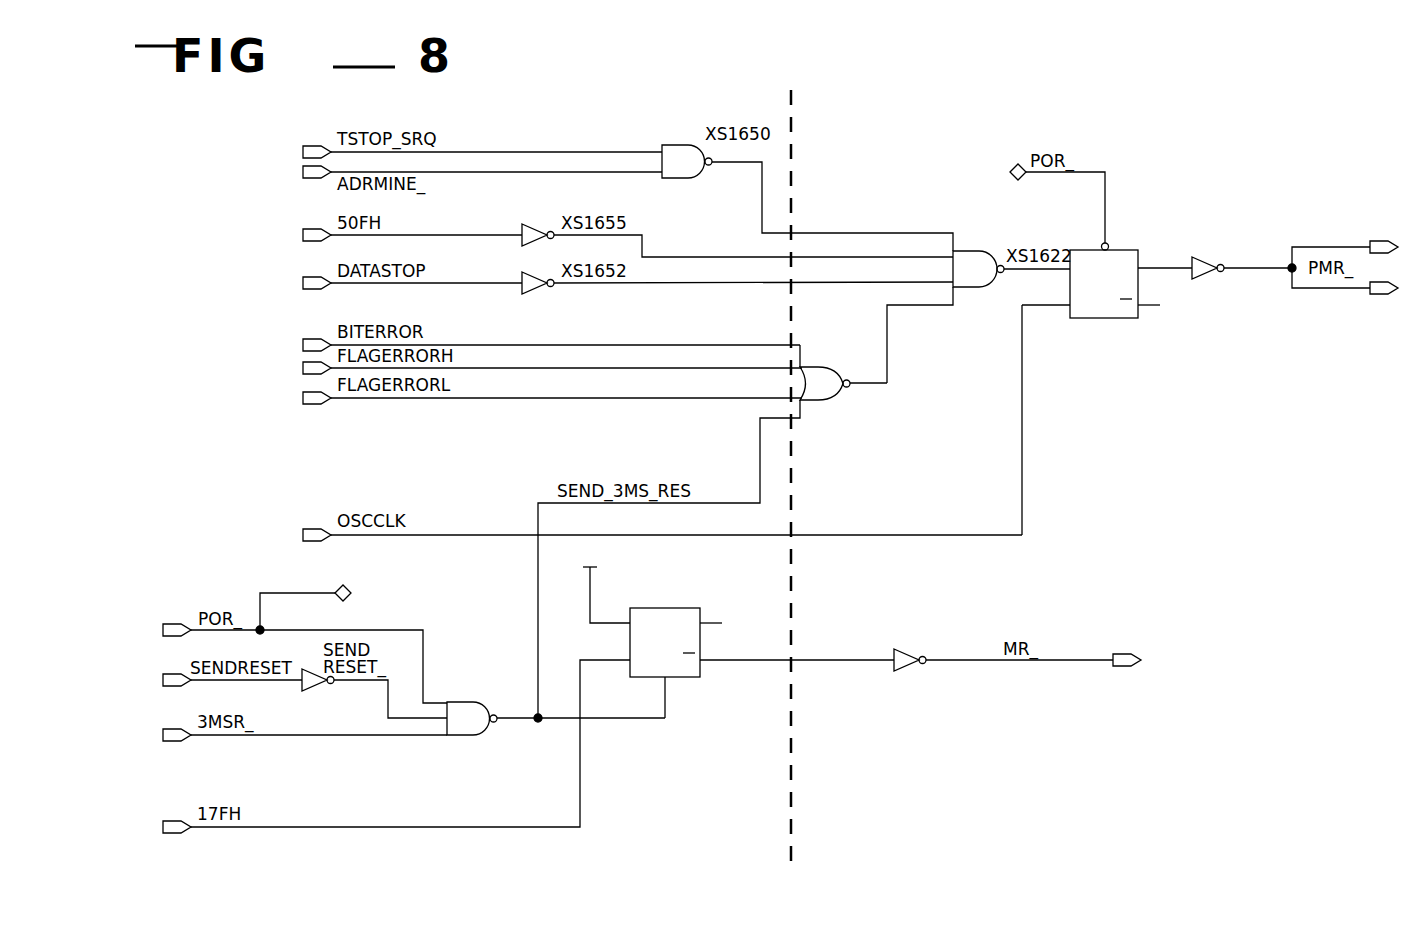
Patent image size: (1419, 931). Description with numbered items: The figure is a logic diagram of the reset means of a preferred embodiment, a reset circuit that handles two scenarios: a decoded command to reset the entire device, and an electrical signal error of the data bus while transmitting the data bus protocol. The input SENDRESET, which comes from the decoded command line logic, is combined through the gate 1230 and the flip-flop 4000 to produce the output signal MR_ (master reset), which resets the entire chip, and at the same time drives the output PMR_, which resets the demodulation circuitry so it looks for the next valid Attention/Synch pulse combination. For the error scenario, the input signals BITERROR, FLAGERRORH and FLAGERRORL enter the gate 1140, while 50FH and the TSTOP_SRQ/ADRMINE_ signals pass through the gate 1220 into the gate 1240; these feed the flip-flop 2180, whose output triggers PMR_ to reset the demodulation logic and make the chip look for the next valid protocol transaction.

The NAND gate 1220 is at (807, 198).
The NAND gate 1240 is at (978, 317).
The NOR gate 1140 is at (843, 385).
The D flip-flop 2180 is at (1085, 253).
The NAND gate 1230 is at (556, 731).
The D flip-flop with reset 4000 is at (652, 642).